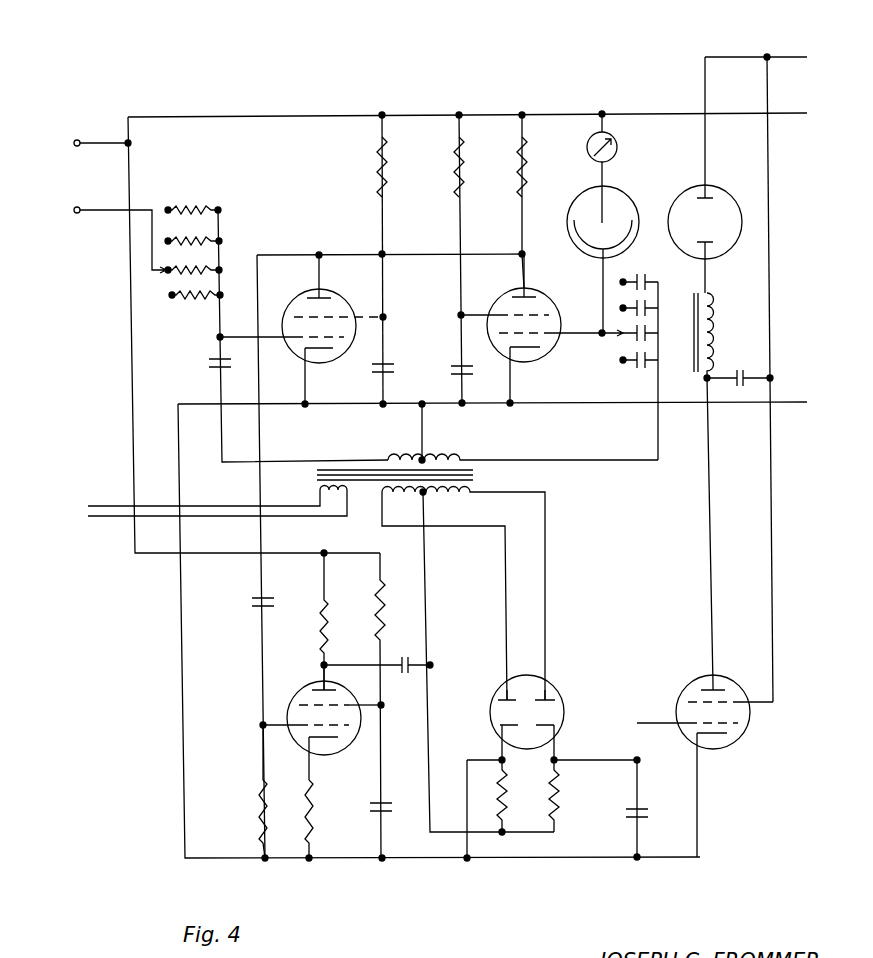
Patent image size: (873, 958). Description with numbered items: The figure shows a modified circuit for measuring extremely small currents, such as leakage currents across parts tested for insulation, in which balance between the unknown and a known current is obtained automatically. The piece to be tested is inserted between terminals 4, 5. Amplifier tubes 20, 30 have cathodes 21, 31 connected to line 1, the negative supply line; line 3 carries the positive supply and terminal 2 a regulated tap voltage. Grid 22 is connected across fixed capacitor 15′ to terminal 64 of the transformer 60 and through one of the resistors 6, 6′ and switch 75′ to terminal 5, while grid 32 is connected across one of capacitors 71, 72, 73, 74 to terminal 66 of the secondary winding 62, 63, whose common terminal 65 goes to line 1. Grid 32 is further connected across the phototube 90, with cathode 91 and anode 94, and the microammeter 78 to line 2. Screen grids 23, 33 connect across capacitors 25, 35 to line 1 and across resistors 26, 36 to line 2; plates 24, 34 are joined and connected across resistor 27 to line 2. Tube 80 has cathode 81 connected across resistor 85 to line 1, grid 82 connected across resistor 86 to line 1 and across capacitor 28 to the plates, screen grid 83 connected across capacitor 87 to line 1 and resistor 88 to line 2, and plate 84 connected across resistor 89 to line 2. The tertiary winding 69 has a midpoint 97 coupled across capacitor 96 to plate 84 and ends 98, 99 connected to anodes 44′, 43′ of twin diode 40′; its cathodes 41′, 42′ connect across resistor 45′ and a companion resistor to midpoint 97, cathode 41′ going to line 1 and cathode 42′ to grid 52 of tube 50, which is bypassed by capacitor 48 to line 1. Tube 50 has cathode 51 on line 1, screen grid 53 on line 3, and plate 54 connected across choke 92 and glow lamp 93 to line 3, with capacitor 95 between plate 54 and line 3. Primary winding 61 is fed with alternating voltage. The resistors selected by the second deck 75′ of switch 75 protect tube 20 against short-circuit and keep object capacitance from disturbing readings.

The line 1 is at (792, 403).
The terminal 2 is at (776, 112).
The line 3 is at (786, 53).
The terminal 4 is at (74, 142).
The terminal 5 is at (74, 209).
The resistor 6 is at (210, 208).
The resistor 6′ is at (210, 239).
The fixed capacitor 15′ is at (207, 364).
The amplifier tube 20 is at (321, 370).
The cathode 21 is at (304, 356).
The grid 22 is at (282, 338).
The screen grid 23 is at (348, 314).
The plate 24 is at (319, 290).
The capacitor 25 is at (403, 362).
The resistor 26 is at (378, 186).
The resistor 27 is at (545, 178).
The capacitor 28 is at (256, 600).
The amplifier tube 30 is at (522, 364).
The cathode 31 is at (509, 358).
The grid 32 is at (558, 337).
The screen grid 33 is at (492, 316).
The plate 34 is at (525, 289).
The capacitor 35 is at (448, 370).
The resistor 36 is at (456, 186).
The twin diode 40′ is at (572, 703).
The cathode 41′ is at (500, 732).
The cathode 42′ is at (556, 731).
The anode 43′ is at (548, 691).
The anode 44′ is at (508, 690).
The resistor 45′ is at (504, 809).
The capacitor 48 is at (646, 822).
The amplifier tube 50 is at (726, 756).
The cathode 51 is at (695, 742).
The grid 52 is at (678, 723).
The screen grid 53 is at (745, 704).
The plate 54 is at (716, 688).
The transformer 60 is at (490, 472).
The primary winding 61 is at (318, 490).
The secondary winding 62 is at (399, 455).
The secondary winding 63 is at (446, 458).
The terminal 64 is at (387, 458).
The common terminal 65 is at (424, 456).
The terminal 66 is at (457, 459).
The tertiary winding 69 is at (470, 496).
The capacitor 71 is at (647, 356).
The capacitor 72 is at (647, 329).
The capacitor 73 is at (647, 304).
The capacitor 74 is at (647, 278).
The switch unit 75 is at (604, 340).
The switch unit 75′ is at (152, 268).
The D. C. microammeter 78 is at (618, 146).
The amplifier tube 80 is at (332, 756).
The cathode 81 is at (312, 744).
The grid 82 is at (288, 732).
The screen grid 83 is at (354, 705).
The plate 84 is at (322, 688).
The resistor 85 is at (312, 821).
The resistor 86 is at (260, 820).
The capacitor 87 is at (390, 808).
The resistor 88 is at (384, 624).
The resistor 89 is at (330, 626).
The phototube 90 is at (560, 243).
The cathode 91 is at (598, 264).
The choke 92 is at (714, 338).
The lamp 93 is at (712, 256).
The anode 94 is at (612, 197).
The capacitor 95 is at (752, 370).
The capacitor 96 is at (409, 661).
The midpoint 97 is at (434, 494).
The end 98 is at (384, 494).
The end 99 is at (479, 499).